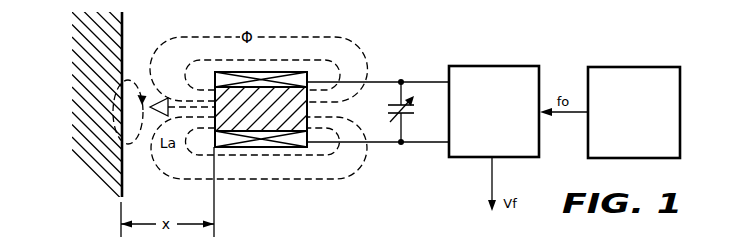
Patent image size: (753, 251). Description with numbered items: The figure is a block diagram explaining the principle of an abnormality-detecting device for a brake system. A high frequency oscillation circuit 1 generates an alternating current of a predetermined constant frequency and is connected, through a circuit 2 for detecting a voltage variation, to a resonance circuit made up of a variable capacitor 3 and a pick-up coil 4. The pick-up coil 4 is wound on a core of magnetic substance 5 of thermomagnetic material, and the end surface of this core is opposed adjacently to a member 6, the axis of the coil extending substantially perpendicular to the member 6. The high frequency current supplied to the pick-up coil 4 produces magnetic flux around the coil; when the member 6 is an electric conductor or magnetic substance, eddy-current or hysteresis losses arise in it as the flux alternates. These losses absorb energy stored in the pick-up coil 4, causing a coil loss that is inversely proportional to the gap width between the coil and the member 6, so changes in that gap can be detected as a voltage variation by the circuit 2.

The high frequency oscillation circuit 1 is at (628, 121).
The circuit for detecting a voltage variation 2 is at (486, 119).
The variable capacitor 3 is at (416, 109).
The pick-up coil 4 is at (281, 77).
The core of magnetic substance 5 is at (279, 122).
The member 6 is at (92, 162).